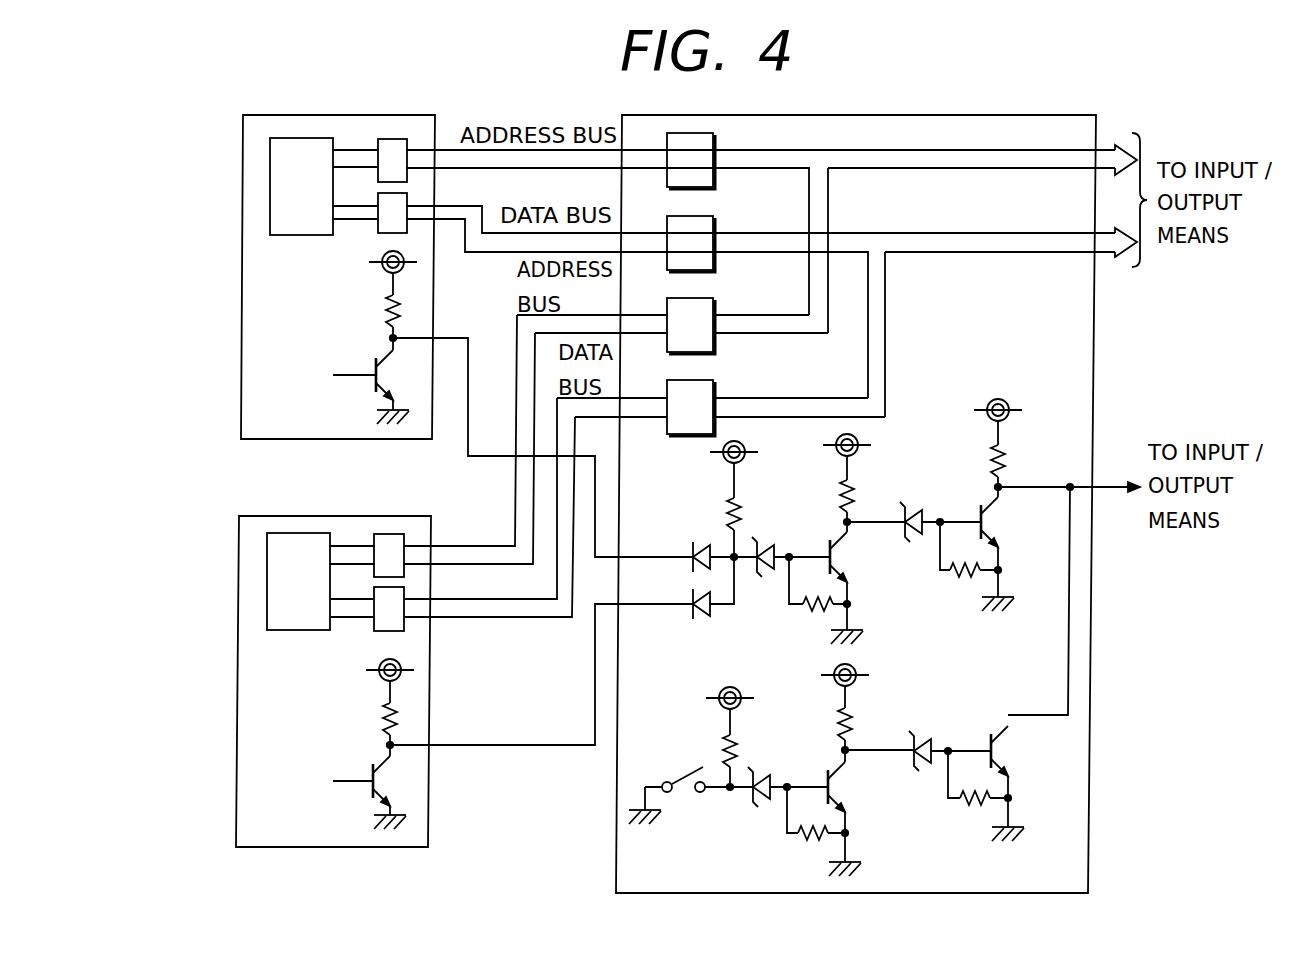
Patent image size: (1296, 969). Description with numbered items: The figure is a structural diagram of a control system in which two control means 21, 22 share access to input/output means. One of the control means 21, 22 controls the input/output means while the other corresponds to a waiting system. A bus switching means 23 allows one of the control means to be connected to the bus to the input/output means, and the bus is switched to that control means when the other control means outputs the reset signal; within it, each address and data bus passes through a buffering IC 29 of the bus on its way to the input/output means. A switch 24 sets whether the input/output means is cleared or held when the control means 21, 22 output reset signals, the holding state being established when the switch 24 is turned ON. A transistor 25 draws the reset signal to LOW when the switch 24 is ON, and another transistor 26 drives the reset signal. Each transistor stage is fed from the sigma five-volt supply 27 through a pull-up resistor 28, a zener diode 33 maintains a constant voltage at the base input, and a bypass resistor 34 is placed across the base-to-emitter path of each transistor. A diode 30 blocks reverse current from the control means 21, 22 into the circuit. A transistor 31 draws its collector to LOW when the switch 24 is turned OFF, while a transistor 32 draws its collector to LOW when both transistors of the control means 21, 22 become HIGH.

The control means 21 is at (241, 407).
The control means 22 is at (237, 816).
The bus switching means 23 is at (614, 855).
The switch 24 is at (694, 774).
The transistor 25 is at (1010, 749).
The transistor 26 is at (1000, 524).
The Σ5V 27 is at (746, 451).
The pull-up resistor 28 is at (738, 500).
The buffering IC 29 is at (679, 174).
The diode 30 is at (704, 539).
The transistor 31 is at (854, 779).
The transistor 32 is at (852, 554).
The zener diode 33 is at (765, 538).
The bypass resistor 34 is at (805, 615).